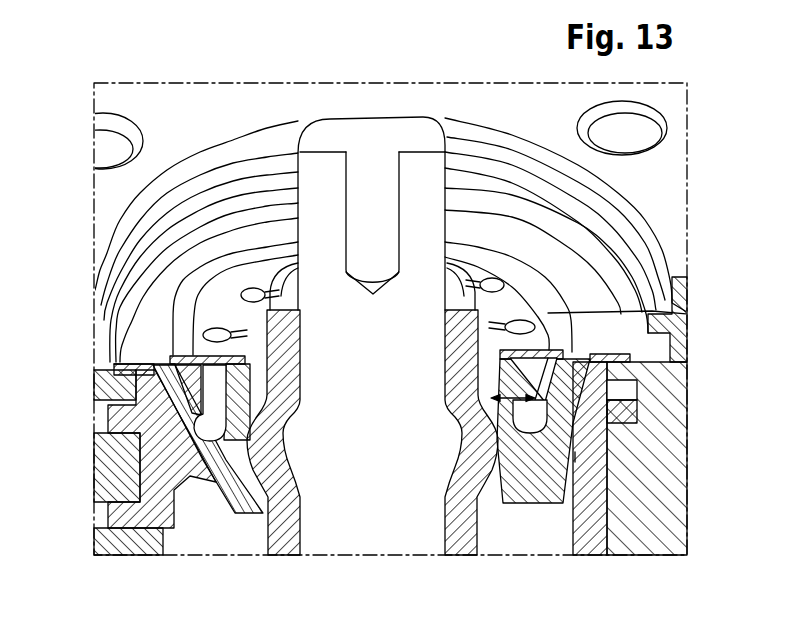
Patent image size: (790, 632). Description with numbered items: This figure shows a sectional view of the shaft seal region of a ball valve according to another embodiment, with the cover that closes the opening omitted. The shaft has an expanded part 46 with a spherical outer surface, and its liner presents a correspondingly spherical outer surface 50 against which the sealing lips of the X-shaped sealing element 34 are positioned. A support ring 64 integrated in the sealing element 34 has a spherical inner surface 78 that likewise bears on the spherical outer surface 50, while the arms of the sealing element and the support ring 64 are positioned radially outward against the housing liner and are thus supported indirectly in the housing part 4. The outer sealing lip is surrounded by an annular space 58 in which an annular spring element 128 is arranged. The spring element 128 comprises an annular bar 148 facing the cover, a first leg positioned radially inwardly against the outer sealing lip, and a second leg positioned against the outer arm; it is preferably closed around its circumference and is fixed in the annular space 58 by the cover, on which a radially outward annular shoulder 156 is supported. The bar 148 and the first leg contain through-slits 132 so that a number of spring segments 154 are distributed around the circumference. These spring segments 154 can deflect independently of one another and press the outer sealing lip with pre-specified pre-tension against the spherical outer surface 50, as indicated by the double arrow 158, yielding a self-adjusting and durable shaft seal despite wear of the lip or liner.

The housing part 4 is at (647, 535).
The sealing element 34 is at (232, 493).
The expanded part 46 is at (460, 447).
The spherical outer surface 50 is at (497, 447).
The annular space 58 is at (533, 415).
The support ring 64 is at (575, 457).
The spherical inner surface 78 is at (257, 417).
The spring element 128 is at (166, 331).
The through-slits 132 is at (648, 316).
The annular bar 148 is at (213, 308).
The spring segments 154 is at (245, 362).
The annular shoulder 156 is at (218, 283).
The double arrow 158 is at (523, 380).